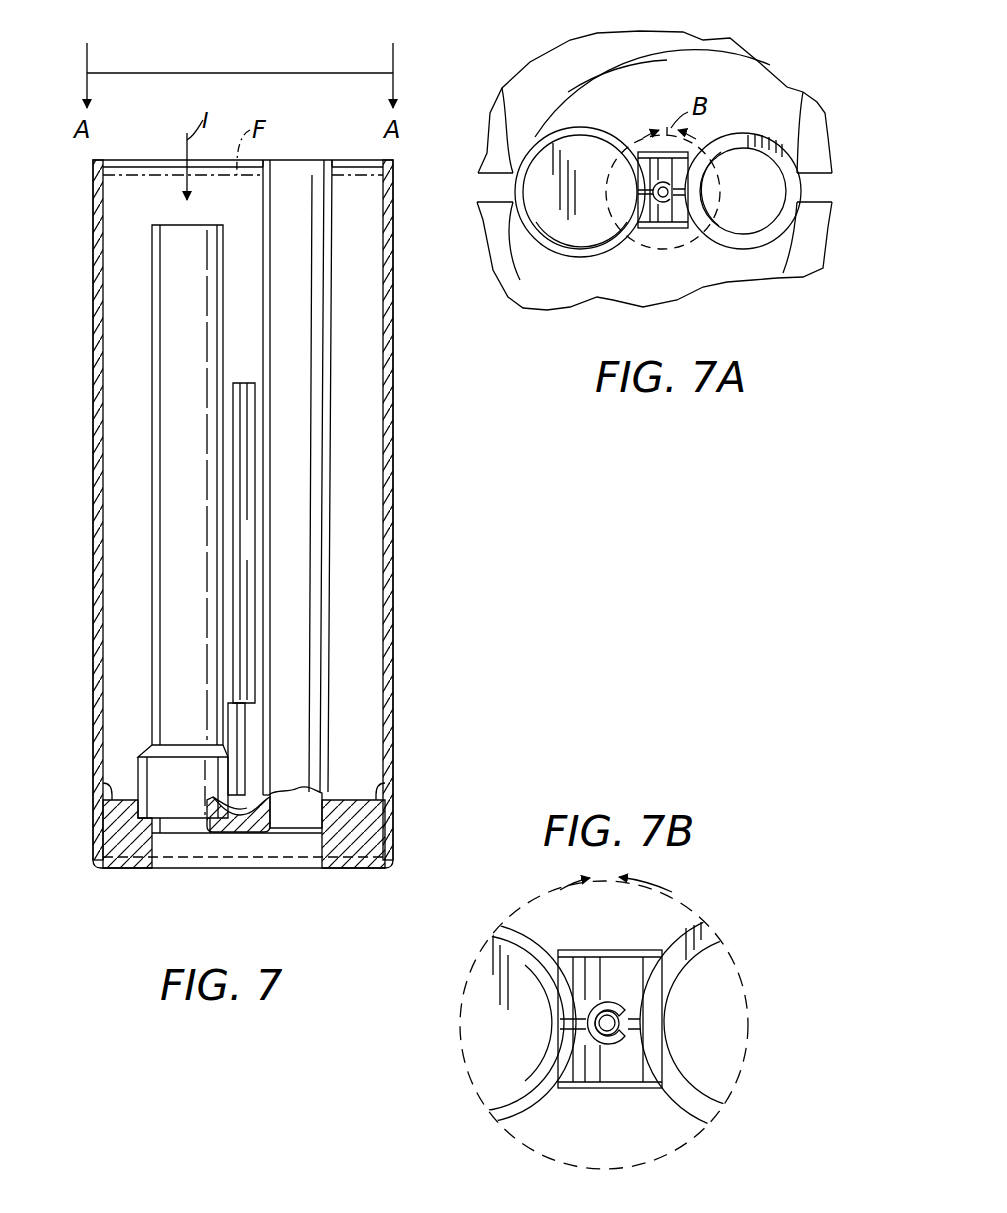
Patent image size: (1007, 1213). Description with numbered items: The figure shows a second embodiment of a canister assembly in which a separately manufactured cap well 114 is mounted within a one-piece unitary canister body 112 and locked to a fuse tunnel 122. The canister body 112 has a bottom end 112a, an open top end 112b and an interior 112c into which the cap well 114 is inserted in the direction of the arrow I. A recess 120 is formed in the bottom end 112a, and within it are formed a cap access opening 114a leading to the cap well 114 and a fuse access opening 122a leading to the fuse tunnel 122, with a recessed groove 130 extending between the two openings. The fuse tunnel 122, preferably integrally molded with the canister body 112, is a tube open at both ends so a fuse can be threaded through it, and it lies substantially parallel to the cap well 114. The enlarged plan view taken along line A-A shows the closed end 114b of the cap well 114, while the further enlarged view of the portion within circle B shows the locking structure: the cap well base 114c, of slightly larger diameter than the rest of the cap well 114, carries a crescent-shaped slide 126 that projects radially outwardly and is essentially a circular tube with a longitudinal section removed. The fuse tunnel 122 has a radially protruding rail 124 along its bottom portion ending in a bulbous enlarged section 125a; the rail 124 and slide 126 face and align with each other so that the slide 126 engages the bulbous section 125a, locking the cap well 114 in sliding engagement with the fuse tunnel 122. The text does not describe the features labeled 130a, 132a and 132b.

In FIG. 7, the canister body 112 is at (388, 592).
In FIG. 7, the bottom end 112a is at (212, 875).
In FIG. 7, the open, top end 112b is at (362, 110).
In FIG. 7, the interior 112c is at (350, 393).
In FIG. 7, the cap well 114 is at (124, 563).
In FIG. 7A, the cap well 114 is at (565, 188).
In FIG. 7, the cap access opening 114a is at (182, 828).
In FIG. 7, the closed end 114b is at (167, 225).
In FIG. 7A, the closed end 114b is at (583, 157).
In FIG. 7B, the closed end 114b is at (503, 1048).
In FIG. 7, the cap well base 114c is at (162, 790).
In FIG. 7A, the cap well base 114c is at (582, 260).
In FIG. 7B, the cap well base 114c is at (537, 1117).
In FIG. 7, the recess 120 is at (267, 848).
In FIG. 7, the fuse tunnel 122 is at (315, 478).
In FIG. 7A, the fuse tunnel 122 is at (763, 128).
In FIG. 7B, the fuse tunnel 122 is at (708, 1105).
In FIG. 7, the fuse access opening 122a is at (297, 827).
In FIG. 7, the rail 124 is at (237, 655).
In FIG. 7B, the rail 124 is at (632, 1030).
In FIG. 7B, the bulbous enlarged section 125a is at (607, 1023).
In FIG. 7, the slide 126 is at (237, 723).
In FIG. 7A, the slide 126 is at (665, 180).
In FIG. 7B, the slide 126 is at (607, 1000).
In FIG. 7, the recessed groove 130 is at (222, 818).
In FIG. 7A, the support web 130a is at (670, 220).
In FIG. 7B, the support web 130a is at (632, 972).
In FIG. 7, the left support 132a is at (110, 783).
In FIG. 7, the right support 132b is at (357, 812).